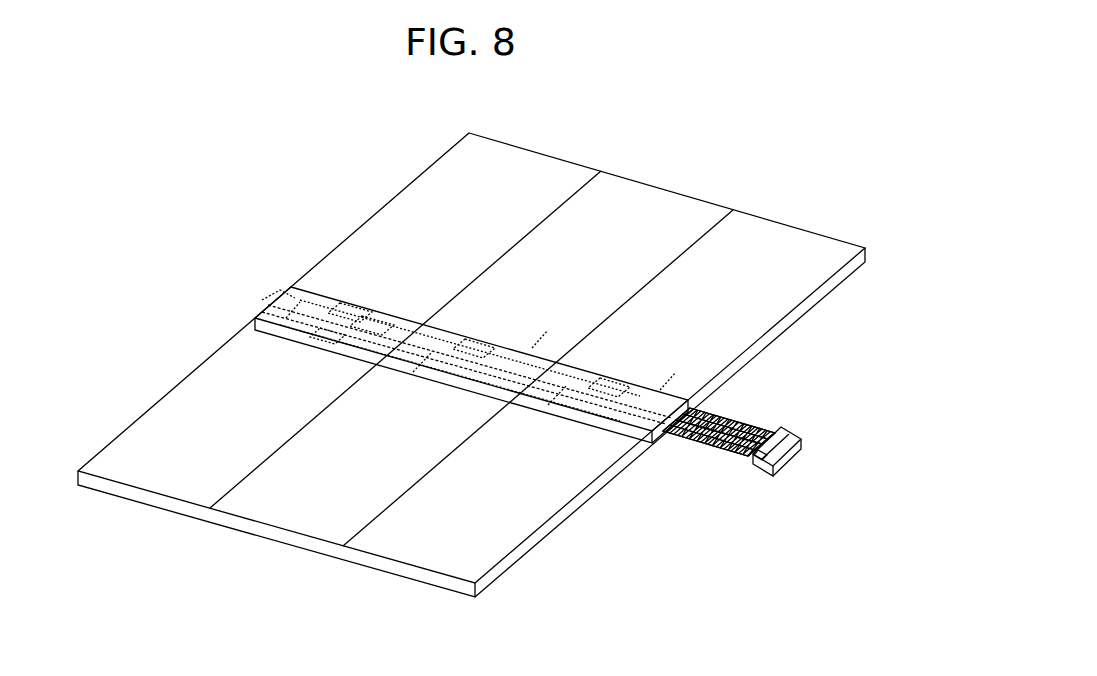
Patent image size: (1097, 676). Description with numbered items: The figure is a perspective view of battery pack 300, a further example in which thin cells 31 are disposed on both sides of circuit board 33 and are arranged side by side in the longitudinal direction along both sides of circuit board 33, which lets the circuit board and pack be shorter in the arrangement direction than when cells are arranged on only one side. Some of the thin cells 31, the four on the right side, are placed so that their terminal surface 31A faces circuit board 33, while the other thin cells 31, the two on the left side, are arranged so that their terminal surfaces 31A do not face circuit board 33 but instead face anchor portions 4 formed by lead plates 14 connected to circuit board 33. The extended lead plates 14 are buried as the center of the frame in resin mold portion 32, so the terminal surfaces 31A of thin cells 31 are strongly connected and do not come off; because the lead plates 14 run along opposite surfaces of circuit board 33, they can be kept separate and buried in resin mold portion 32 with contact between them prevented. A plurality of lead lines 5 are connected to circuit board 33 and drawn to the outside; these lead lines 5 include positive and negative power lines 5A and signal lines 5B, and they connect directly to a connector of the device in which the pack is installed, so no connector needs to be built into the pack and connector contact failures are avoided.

The battery pack 300 is at (491, 368).
The thin cell 31 is at (518, 177).
The terminal surface 31A is at (300, 302).
The resin mold portion 32 is at (471, 371).
The circuit board 33 is at (440, 358).
The lead plate 14 is at (460, 346).
The anchor portion 4 is at (380, 325).
The lead line 5 is at (707, 485).
The power line 5A is at (674, 436).
The signal line 5B is at (758, 521).